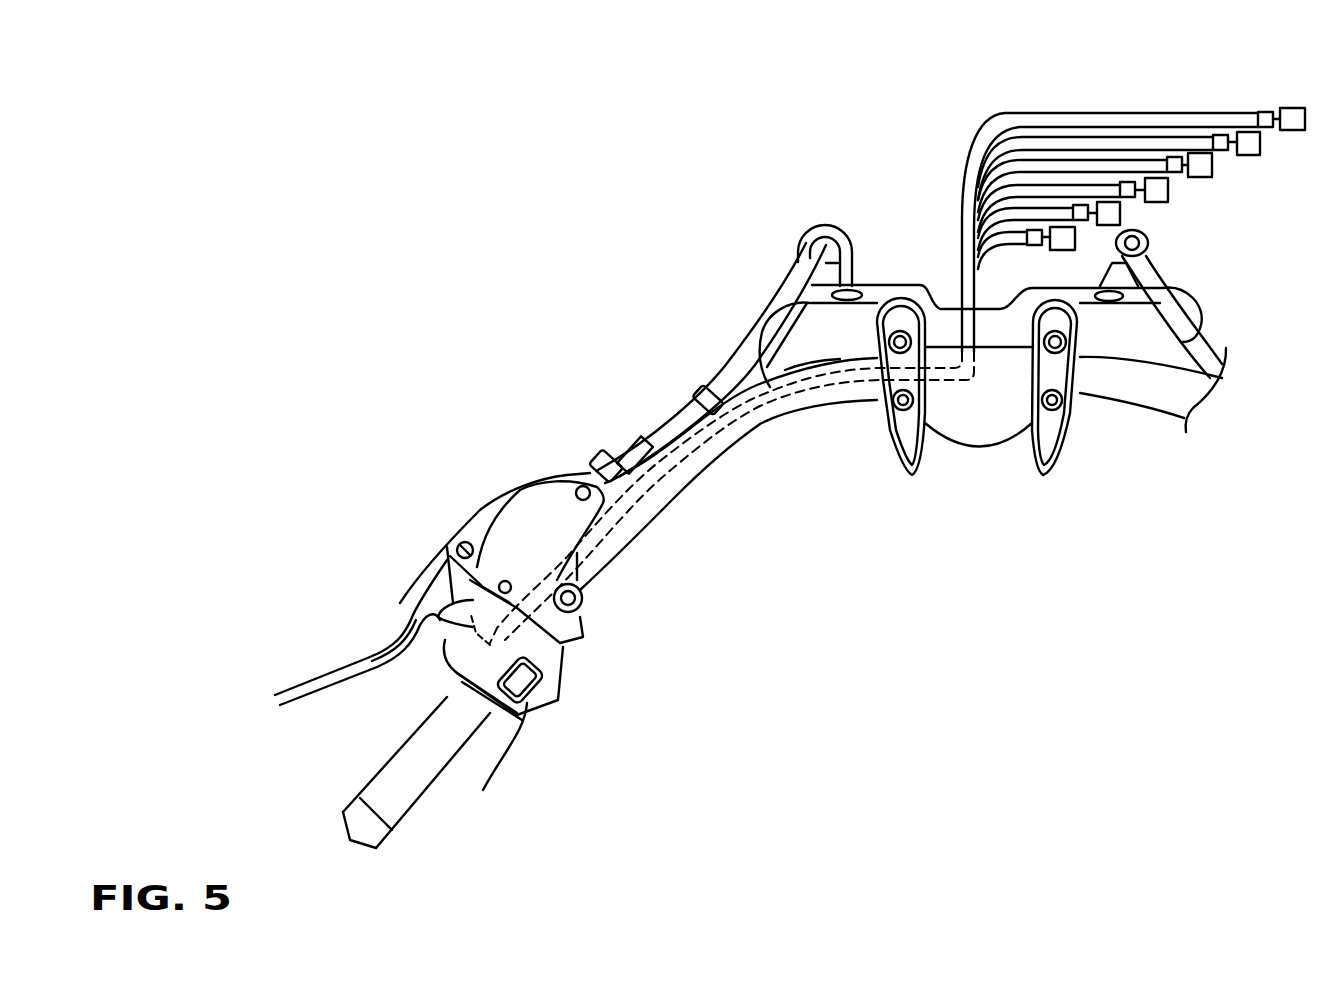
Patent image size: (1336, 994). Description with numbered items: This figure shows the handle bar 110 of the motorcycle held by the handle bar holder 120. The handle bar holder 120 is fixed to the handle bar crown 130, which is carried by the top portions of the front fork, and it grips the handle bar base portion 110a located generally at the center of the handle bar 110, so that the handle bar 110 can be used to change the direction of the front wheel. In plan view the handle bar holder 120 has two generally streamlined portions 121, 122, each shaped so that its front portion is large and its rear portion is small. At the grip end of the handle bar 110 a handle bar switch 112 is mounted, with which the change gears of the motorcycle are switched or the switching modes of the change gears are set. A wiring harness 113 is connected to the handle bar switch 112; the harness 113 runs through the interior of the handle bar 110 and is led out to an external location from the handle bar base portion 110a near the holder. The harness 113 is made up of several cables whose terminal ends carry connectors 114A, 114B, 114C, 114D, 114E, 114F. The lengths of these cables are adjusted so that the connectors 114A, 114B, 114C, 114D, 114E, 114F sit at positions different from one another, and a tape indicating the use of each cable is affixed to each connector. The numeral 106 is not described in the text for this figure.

The handlebar switch 106 is at (565, 668).
The handle bar 110 is at (760, 437).
The handle bar base portion 110a is at (853, 392).
The handle bar switch 112 is at (445, 643).
The wiring harness 113 is at (668, 493).
The connector 114A is at (1293, 120).
The connector 114B is at (1248, 152).
The connector 114C is at (1200, 170).
The connector 114D is at (1160, 203).
The connector 114E is at (1110, 207).
The connector 114F is at (1067, 230).
The handle bar holder 120 is at (980, 407).
The streamlined portion 121 is at (915, 478).
The streamlined portion 122 is at (1045, 475).
The handle bar crown 130 is at (1125, 355).